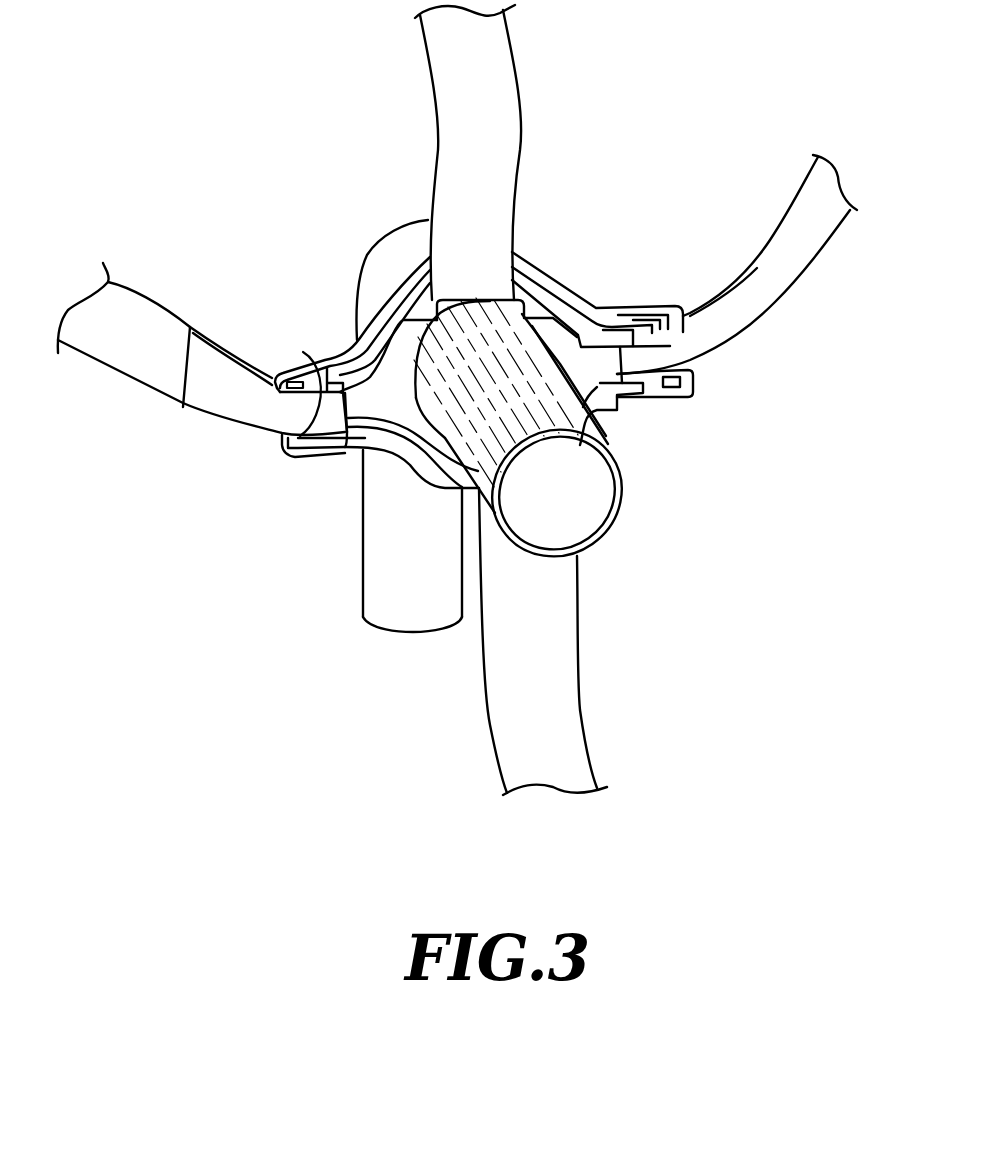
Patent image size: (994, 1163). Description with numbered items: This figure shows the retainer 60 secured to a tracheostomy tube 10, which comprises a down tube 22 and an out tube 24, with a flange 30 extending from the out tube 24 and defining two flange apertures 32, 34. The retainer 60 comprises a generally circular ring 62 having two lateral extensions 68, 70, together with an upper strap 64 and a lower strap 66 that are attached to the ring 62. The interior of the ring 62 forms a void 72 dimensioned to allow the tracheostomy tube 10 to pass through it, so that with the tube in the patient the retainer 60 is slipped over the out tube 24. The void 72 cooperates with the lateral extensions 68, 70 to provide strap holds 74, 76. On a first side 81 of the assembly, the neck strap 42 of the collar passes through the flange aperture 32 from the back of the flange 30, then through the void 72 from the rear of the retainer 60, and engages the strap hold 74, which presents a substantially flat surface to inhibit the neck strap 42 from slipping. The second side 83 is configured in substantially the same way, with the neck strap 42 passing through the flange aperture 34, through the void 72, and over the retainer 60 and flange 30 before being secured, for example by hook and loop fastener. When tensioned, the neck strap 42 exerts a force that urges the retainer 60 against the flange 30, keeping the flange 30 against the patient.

The tracheostomy tube 10 is at (538, 399).
The down tube 22 is at (390, 592).
The out tube 24 is at (600, 527).
The flange 30 is at (537, 266).
The flange aperture 32 is at (674, 385).
The flange aperture 34 is at (294, 385).
The neck strap 42 is at (133, 353).
The retainer 60 is at (357, 358).
The ring 62 is at (397, 317).
The upper strap 64 is at (497, 53).
The lower strap 66 is at (547, 717).
The lateral extension 68 is at (667, 313).
The lateral extension 70 is at (270, 375).
The void 72 is at (397, 408).
The strap hold 74 is at (597, 387).
The strap hold 76 is at (363, 449).
The first side 81 is at (675, 428).
The second side 83 is at (280, 466).